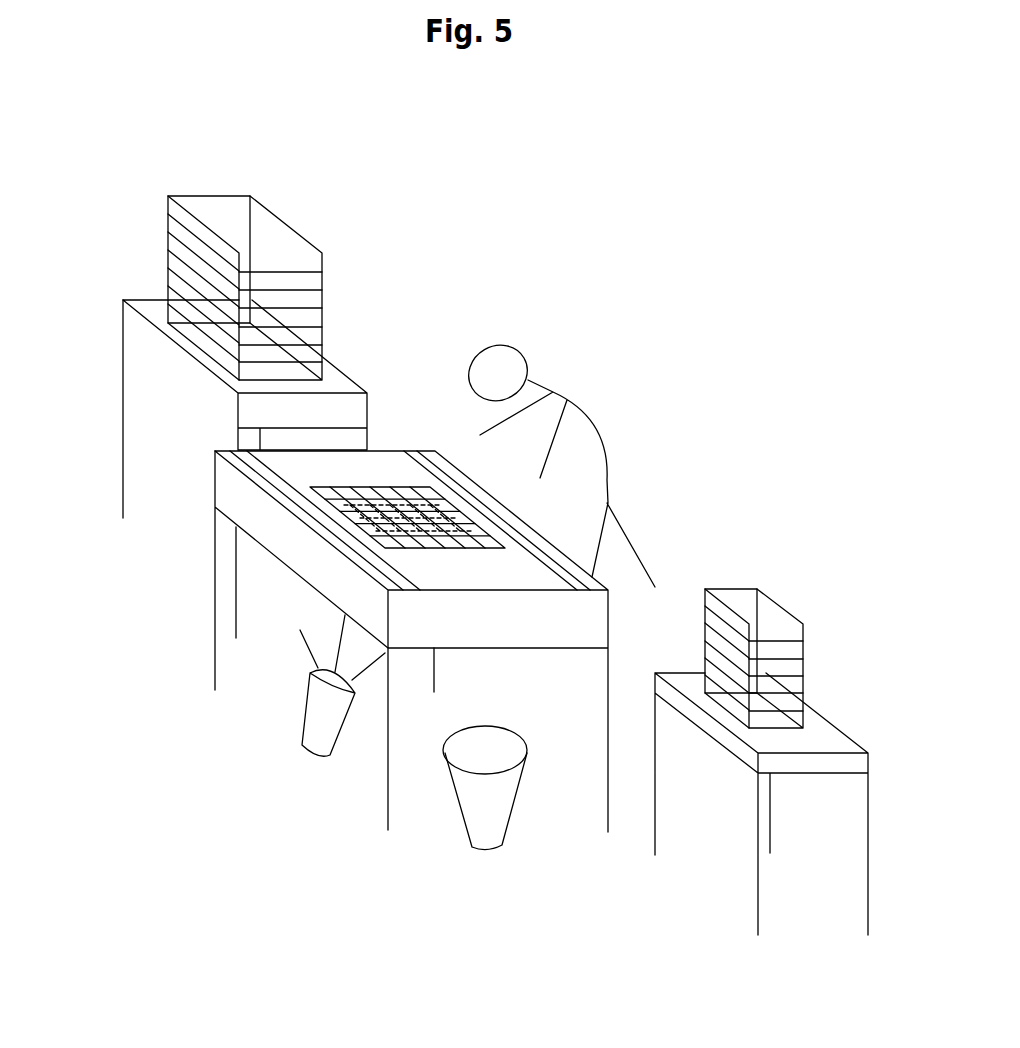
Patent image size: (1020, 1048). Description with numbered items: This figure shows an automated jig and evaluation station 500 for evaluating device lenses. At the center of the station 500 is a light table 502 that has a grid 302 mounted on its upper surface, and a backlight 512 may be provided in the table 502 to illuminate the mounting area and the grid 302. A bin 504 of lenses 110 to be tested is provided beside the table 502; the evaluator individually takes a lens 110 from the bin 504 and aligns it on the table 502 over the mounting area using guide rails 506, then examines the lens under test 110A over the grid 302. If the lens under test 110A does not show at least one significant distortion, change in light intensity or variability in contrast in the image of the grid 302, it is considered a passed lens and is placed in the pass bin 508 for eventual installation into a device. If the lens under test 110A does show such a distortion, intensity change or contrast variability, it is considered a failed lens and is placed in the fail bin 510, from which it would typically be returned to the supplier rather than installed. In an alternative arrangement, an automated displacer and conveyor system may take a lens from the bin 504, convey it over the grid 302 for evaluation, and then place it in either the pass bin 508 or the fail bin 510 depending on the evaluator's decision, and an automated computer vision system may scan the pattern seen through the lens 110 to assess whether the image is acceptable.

The lens 110 is at (267, 228).
The lens under test 110A is at (388, 505).
The grid 302 is at (463, 545).
The automated jig and evaluation station 500 is at (186, 885).
The light table 502 is at (225, 497).
The bin 504 is at (130, 330).
The guide rails 506 is at (418, 463).
The pass bin 508 is at (817, 730).
The fail bin 510 is at (507, 805).
The backlight 512 is at (342, 715).